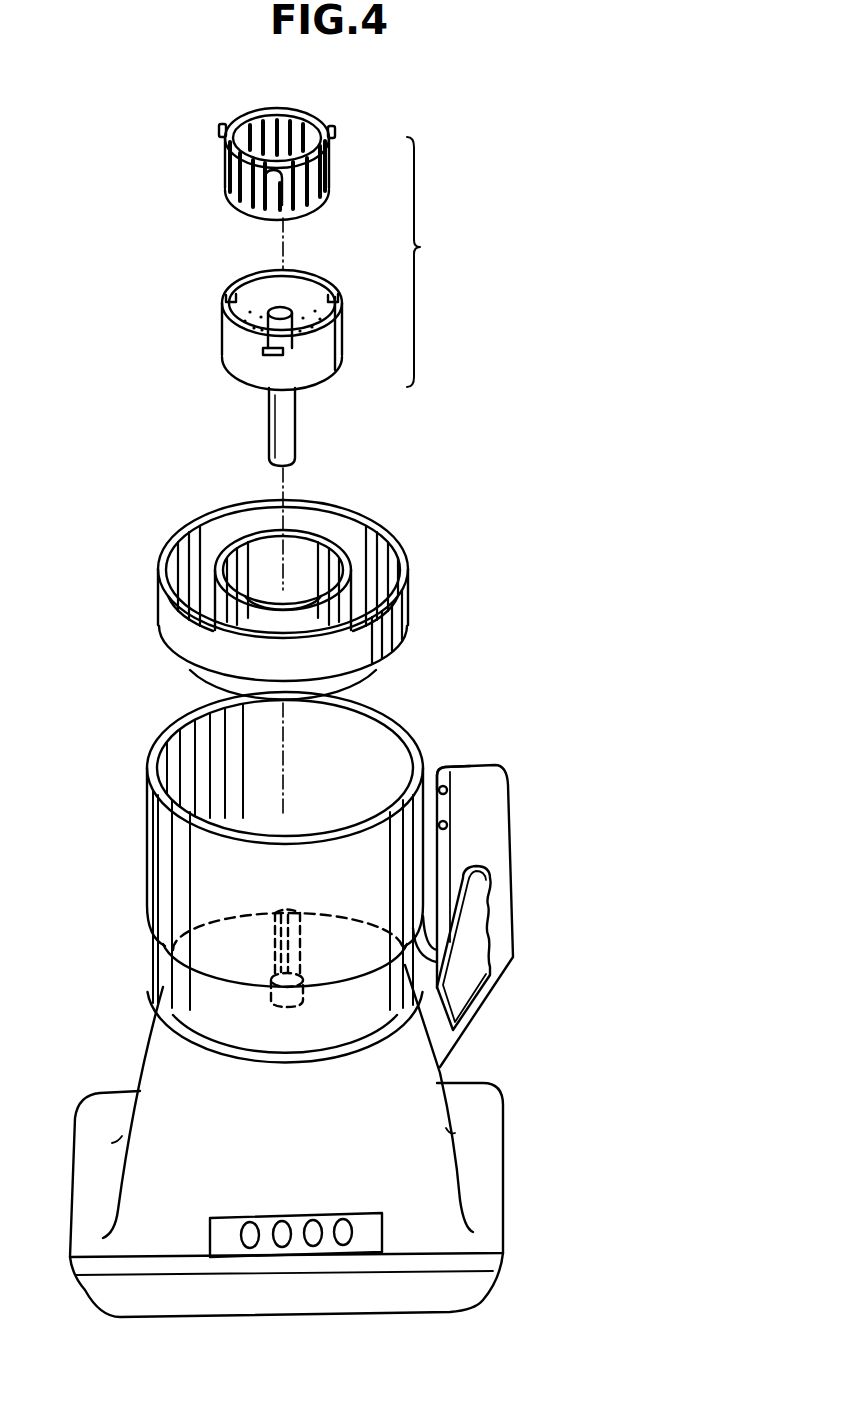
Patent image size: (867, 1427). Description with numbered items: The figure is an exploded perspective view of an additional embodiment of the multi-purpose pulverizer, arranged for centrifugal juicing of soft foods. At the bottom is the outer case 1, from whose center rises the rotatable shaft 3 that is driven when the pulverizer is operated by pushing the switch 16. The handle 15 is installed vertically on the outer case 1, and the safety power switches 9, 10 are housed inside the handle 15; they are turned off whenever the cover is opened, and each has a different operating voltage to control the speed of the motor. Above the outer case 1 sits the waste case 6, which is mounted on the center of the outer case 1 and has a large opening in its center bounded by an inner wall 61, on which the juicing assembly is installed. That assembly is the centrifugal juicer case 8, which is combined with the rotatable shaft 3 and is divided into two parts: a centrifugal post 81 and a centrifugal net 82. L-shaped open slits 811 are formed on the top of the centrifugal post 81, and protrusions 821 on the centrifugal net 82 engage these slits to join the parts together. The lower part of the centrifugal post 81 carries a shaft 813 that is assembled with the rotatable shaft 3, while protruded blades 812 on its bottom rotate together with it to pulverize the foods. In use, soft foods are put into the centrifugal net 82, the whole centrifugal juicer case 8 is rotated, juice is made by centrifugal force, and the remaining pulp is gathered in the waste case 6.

The outer case 1 is at (131, 864).
The rotatable shaft 3 is at (270, 952).
The waste case 6 is at (266, 599).
The inner wall 61 is at (345, 556).
The centrifugal juicer case 8 is at (427, 262).
The centrifugal post 81 is at (205, 340).
The open slits 811 is at (273, 355).
The protruded blades 812 is at (304, 317).
The shaft 813 is at (290, 425).
The centrifugal net 82 is at (213, 183).
The protrusions 821 is at (335, 129).
The safety power switch 9 is at (443, 778).
The safety power switch 10 is at (448, 824).
The handle 15 is at (506, 878).
The switch 16 is at (287, 1243).